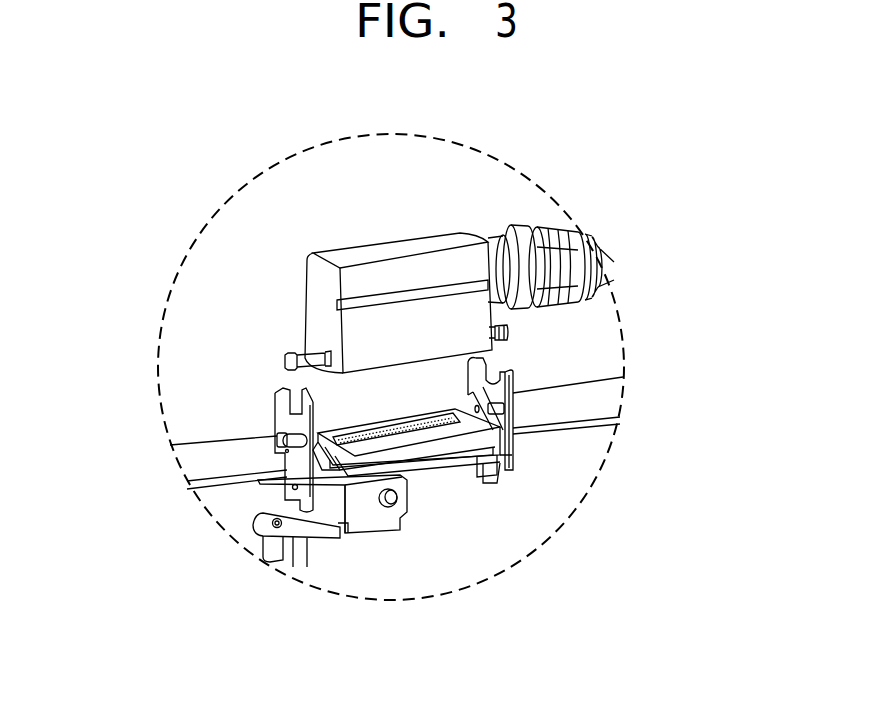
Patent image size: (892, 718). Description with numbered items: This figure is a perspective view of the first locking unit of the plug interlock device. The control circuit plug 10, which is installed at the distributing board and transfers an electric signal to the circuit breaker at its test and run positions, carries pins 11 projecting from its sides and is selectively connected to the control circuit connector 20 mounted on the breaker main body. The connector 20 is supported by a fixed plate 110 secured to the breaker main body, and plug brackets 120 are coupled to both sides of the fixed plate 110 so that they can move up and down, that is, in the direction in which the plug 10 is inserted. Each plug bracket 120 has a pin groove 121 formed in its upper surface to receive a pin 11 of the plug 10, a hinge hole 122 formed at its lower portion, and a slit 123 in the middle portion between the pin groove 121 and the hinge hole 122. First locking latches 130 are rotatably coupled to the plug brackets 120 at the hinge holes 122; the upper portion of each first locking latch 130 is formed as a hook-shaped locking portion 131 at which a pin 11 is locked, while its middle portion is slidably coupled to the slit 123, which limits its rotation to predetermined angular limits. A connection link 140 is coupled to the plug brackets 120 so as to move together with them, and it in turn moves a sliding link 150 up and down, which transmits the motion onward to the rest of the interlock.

The control circuit plug 10 is at (388, 250).
The pins 11 is at (285, 362).
The control circuit connector 20 is at (430, 425).
The fixed plate 110 is at (402, 475).
The plug brackets 120 is at (300, 467).
The pin grooves 121 is at (275, 402).
The hinge holes 122 is at (292, 490).
The slit 123 is at (280, 440).
The first locking latches 130 is at (468, 427).
The locking portion 131 is at (475, 392).
The connection link 140 is at (365, 520).
The sliding link 150 is at (298, 553).